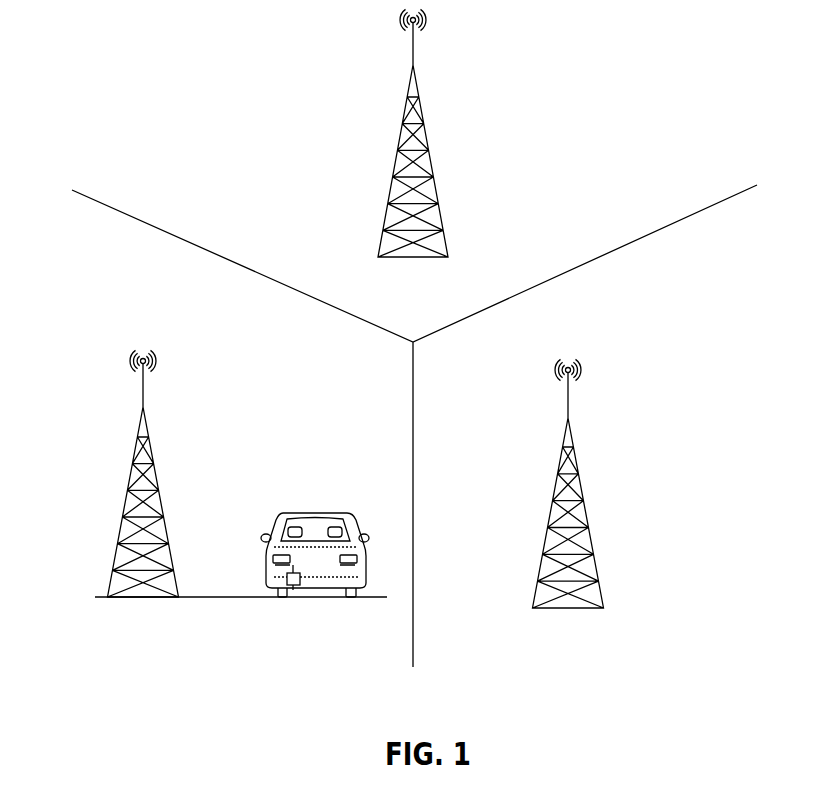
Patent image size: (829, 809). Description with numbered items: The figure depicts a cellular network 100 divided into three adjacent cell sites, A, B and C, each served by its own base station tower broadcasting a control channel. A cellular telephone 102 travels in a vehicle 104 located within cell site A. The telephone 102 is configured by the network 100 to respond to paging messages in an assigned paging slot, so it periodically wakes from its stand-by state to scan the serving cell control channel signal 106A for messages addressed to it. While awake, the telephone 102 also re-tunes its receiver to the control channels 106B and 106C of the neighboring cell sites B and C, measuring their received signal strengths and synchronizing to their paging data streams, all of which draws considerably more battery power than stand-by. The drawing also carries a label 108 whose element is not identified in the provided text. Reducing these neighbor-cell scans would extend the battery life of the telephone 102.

The network 100 is at (762, 70).
The cellular telephone 102 is at (393, 167).
The vehicle 104 is at (412, 45).
The serving cell control channel signal 106A is at (158, 362).
The control channel of neighboring cell site B 106B is at (427, 17).
The control channel of neighboring cell site C 106C is at (583, 371).
The vehicle 108 is at (293, 513).